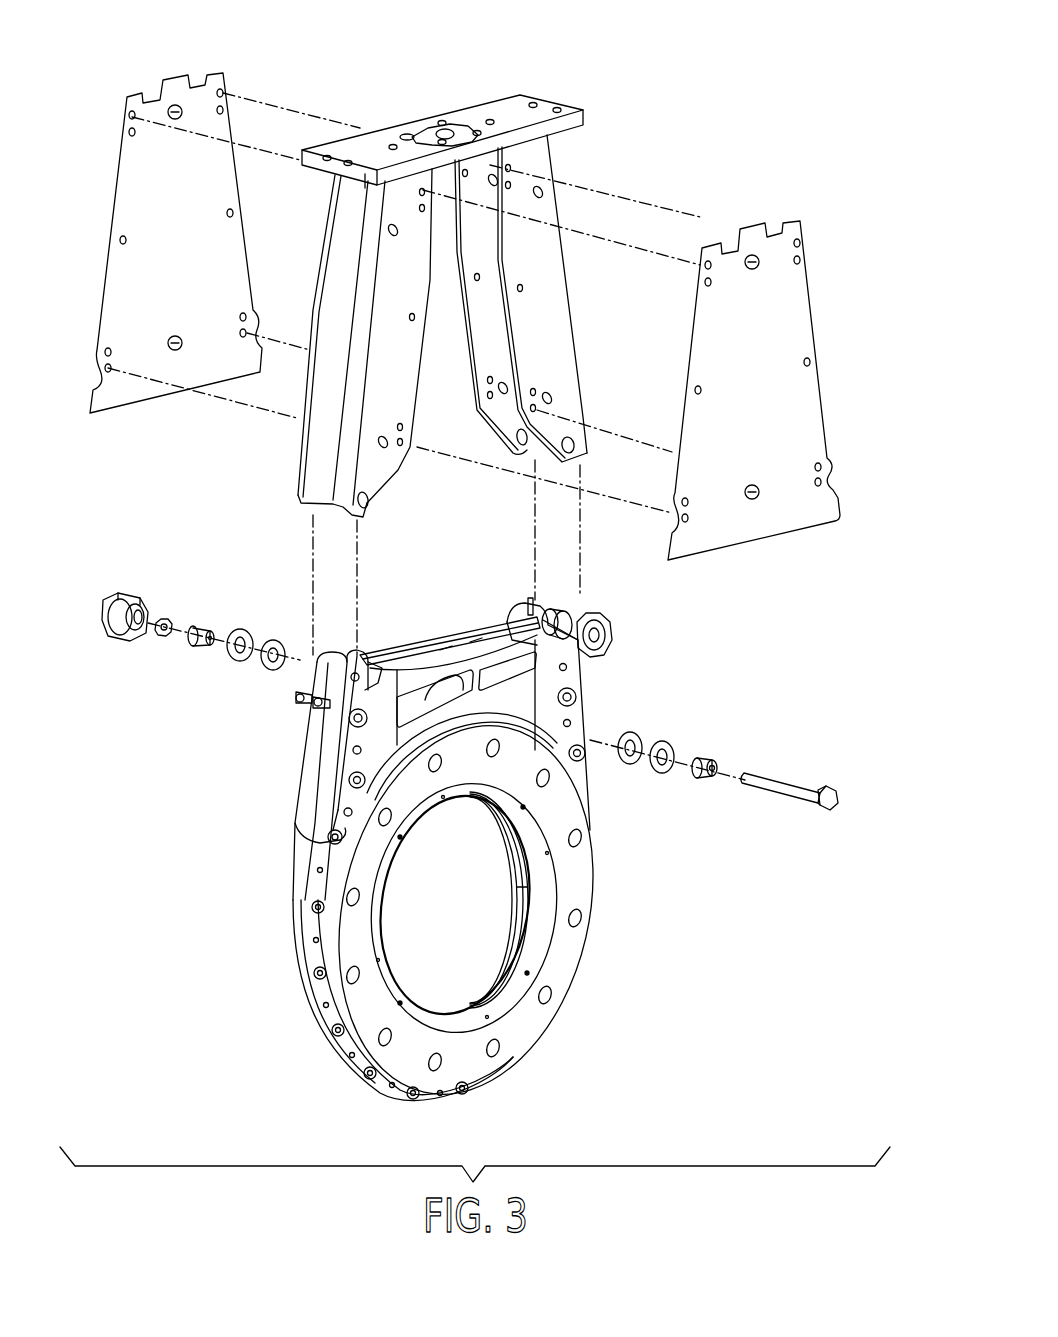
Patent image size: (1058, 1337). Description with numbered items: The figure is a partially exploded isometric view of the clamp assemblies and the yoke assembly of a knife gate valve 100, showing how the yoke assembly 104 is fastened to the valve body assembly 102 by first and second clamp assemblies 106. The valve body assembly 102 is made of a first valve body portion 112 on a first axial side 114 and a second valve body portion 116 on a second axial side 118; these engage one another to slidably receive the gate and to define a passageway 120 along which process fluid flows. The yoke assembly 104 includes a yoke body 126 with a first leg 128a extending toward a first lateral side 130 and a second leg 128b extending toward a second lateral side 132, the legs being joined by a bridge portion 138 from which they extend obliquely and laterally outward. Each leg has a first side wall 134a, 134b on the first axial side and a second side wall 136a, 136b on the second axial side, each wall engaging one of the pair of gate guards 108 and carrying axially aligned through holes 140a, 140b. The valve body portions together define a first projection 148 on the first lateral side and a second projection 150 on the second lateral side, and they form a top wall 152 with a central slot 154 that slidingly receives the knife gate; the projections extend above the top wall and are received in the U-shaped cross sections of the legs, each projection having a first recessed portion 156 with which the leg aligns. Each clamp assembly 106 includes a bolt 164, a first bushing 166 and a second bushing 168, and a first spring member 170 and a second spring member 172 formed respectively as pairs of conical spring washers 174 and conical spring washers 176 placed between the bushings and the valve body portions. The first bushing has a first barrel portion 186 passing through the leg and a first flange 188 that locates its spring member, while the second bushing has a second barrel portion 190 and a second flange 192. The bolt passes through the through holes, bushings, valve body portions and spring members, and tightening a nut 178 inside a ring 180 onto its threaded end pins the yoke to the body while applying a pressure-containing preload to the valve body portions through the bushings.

The knife gate valve 100 is at (614, 50).
The valve body assembly 102 is at (271, 546).
The yoke assembly 104 is at (608, 181).
The clamp assembly 106 is at (175, 561).
The gate guard 108 is at (120, 167).
The first valve body portion 112 is at (555, 1013).
The first axial side 114 is at (616, 962).
The second valve body portion 116 is at (298, 1008).
The second axial side 118 is at (250, 838).
The passageway 120 is at (454, 947).
The yoke body 126 is at (333, 204).
The first leg 128a is at (327, 312).
The second leg 128b is at (562, 287).
The first lateral side 130 is at (219, 880).
The second lateral side 132 is at (672, 611).
The first side wall 134a is at (413, 367).
The first side wall 134b is at (557, 322).
The second side wall 136a is at (305, 426).
The second side wall 136b is at (473, 180).
The bridge portion 138 is at (508, 103).
The through hole 140a is at (373, 505).
The through hole 140b is at (529, 443).
The first projection 148 is at (325, 655).
The second projection 150 is at (558, 601).
The top wall 152 is at (483, 627).
The central slot 154 is at (444, 638).
The first recessed portion 156 is at (336, 727).
The bolt 164 is at (786, 781).
The first bushing 166 is at (704, 757).
The second bushing 168 is at (193, 640).
The first spring member 170 is at (651, 729).
The second spring member 172 is at (269, 625).
The conical spring washers 174 is at (664, 771).
The conical spring washers 176 is at (240, 662).
The nut 178 is at (165, 620).
The ring 180 is at (103, 620).
The first barrel portion 186 is at (697, 781).
The first flange 188 is at (712, 781).
The second barrel portion 190 is at (212, 645).
The second flange 192 is at (193, 633).